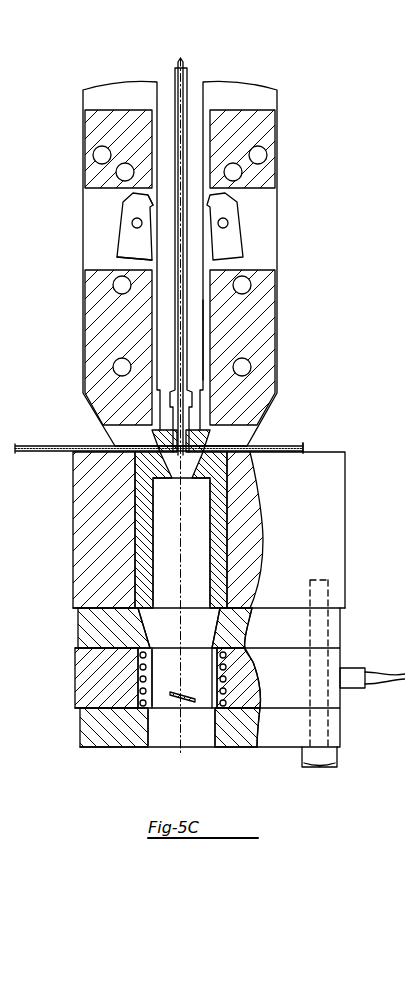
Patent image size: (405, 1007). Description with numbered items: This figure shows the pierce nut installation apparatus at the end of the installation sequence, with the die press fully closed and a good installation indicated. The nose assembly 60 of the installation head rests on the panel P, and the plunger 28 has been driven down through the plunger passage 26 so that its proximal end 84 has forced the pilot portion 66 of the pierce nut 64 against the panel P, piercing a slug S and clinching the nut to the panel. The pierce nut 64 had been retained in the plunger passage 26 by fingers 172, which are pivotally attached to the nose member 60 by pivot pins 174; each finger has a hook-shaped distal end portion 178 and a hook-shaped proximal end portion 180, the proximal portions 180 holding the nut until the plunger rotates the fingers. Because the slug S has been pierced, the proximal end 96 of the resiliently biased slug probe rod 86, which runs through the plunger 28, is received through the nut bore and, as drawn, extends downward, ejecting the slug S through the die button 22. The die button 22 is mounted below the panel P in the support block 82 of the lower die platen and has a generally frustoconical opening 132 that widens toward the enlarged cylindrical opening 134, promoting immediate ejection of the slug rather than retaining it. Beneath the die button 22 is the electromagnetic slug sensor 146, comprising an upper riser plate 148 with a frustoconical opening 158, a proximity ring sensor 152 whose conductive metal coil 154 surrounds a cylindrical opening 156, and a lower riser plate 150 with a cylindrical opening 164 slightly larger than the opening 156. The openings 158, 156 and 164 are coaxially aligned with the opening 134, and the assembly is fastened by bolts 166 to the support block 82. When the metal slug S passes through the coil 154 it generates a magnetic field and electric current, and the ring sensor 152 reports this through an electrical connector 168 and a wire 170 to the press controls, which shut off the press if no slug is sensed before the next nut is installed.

The die button 22 is at (229, 525).
The plunger passage 26 is at (212, 331).
The plunger 28 is at (170, 93).
The nose assembly 60 is at (262, 307).
The pierce nut 64 is at (304, 447).
The pilot portion 66 is at (157, 493).
The support block 82 is at (345, 553).
The proximal end of the plunger 84 is at (150, 442).
The slug probe rod 86 is at (182, 80).
The proximal end of the slug probe rod 96 is at (213, 467).
The frustoconical opening 132 is at (174, 470).
The enlarged cylindrical opening 134 is at (153, 593).
The slug sensor 146 is at (226, 766).
The upper riser plate 148 is at (78, 628).
The lower riser plate 150 is at (112, 738).
The proximity ring sensor 152 is at (75, 703).
The conductive metal coil 154 is at (230, 668).
The cylindrical opening 156 is at (153, 680).
The frustoconical opening 158 is at (142, 625).
The cylindrical opening 164 is at (148, 727).
The bolts 166 is at (325, 757).
The electrical connector 168 is at (352, 688).
The wire 170 is at (385, 672).
The fingers 172 is at (127, 250).
The pivot pins 174 is at (132, 223).
The hook-shaped distal end portions 178 is at (150, 204).
The hook-shaped proximal end portions 180 is at (145, 268).
The panel P is at (151, 449).
The slug S is at (195, 701).